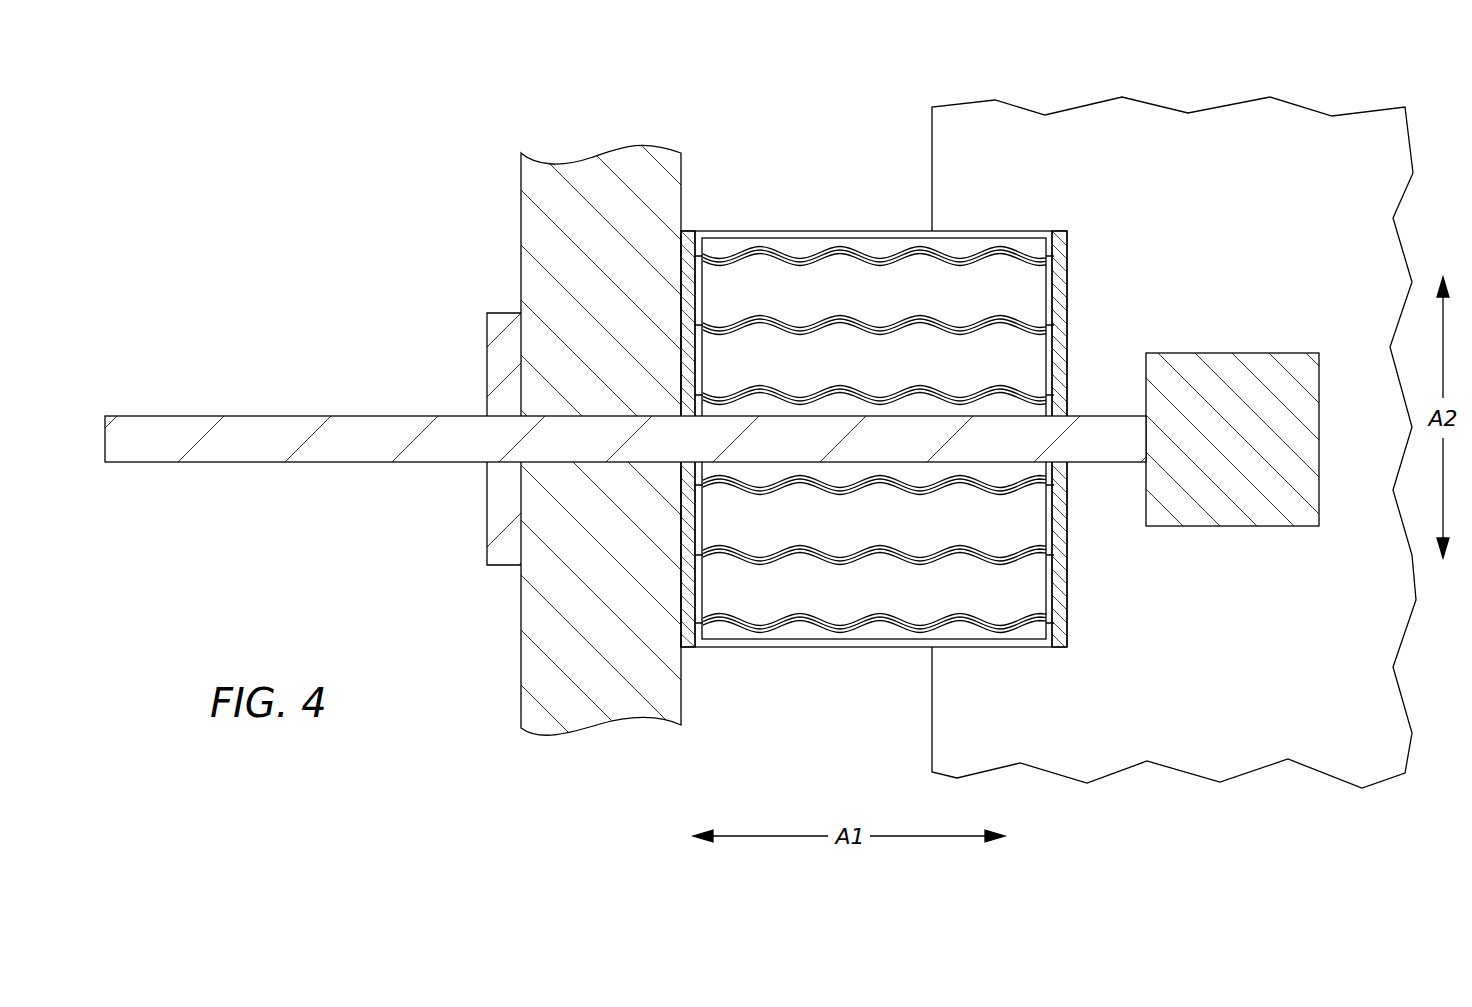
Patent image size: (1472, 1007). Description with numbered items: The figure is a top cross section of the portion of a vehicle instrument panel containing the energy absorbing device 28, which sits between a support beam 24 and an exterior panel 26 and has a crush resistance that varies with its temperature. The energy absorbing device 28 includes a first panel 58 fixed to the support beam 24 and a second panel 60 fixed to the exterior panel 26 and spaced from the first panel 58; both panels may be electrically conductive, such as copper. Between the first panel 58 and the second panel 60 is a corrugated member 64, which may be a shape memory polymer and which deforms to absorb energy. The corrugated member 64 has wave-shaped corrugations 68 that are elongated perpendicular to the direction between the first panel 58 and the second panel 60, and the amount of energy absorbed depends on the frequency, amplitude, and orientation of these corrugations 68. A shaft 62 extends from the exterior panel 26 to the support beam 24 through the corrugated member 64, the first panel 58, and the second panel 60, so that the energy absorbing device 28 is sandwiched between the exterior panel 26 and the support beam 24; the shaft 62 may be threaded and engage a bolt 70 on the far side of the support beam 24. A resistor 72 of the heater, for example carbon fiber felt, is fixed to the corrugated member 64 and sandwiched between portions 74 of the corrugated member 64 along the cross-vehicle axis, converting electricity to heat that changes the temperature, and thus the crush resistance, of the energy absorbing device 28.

The support beam 24 is at (548, 203).
The exterior panel 26 is at (1300, 132).
The energy absorbing device 28 is at (798, 650).
The first panel 58 is at (688, 650).
The second panel 60 is at (1060, 650).
The shaft 62 is at (248, 450).
The corrugated member 64 is at (874, 394).
The corrugations 68 is at (775, 264).
The bolt 70 is at (490, 342).
The resistor 72 is at (722, 258).
The portions of the corrugated member 74 is at (758, 250).